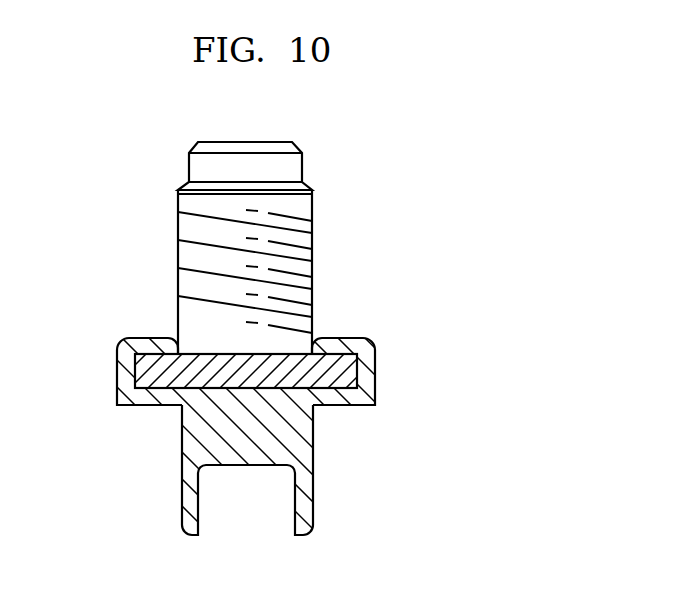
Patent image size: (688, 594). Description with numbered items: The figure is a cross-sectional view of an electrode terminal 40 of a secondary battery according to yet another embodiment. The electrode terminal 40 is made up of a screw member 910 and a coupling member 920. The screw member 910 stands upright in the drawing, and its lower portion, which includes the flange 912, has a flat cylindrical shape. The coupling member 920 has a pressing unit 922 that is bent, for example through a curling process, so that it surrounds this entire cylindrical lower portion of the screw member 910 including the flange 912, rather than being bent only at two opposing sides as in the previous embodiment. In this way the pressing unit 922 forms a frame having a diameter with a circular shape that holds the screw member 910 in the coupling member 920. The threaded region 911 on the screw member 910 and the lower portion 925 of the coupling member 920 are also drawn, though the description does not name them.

The electrode terminal 40 is at (288, 344).
The screw member 910 is at (331, 209).
The thread portion 911 is at (313, 273).
The flange 912 is at (347, 340).
The coupling member 920 is at (400, 404).
The pressing unit 922 is at (289, 371).
The leg portion 925 is at (267, 448).